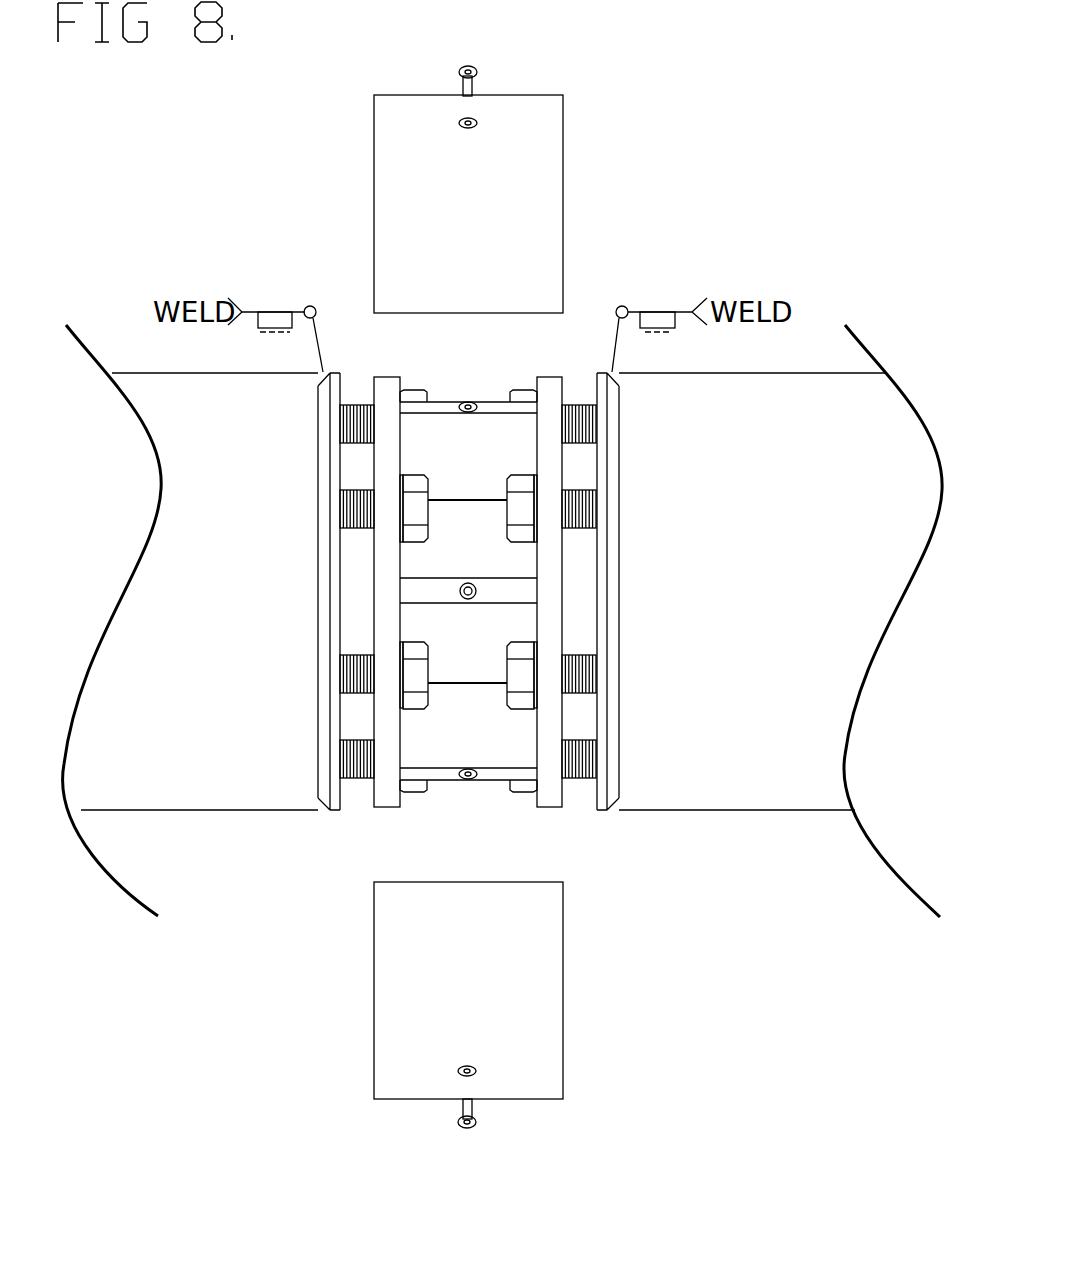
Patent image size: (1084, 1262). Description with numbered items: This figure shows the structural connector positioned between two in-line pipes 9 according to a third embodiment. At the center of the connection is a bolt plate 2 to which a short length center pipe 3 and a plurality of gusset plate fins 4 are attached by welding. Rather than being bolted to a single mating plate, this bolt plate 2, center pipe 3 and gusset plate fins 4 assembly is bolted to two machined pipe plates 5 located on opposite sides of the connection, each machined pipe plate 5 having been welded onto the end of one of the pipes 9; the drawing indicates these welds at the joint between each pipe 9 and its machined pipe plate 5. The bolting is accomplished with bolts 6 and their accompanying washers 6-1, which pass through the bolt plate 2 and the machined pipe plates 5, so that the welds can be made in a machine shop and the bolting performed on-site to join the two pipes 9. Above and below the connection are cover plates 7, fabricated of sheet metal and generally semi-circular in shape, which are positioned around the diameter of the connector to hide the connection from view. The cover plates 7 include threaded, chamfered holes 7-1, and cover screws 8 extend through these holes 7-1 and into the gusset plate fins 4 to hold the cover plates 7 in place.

The machined bolt plate 2 is at (387, 795).
The short length center pipe 3 is at (457, 657).
The gusset plate fins 4 is at (504, 436).
The machined pipe plate 5 is at (325, 792).
The bolts 6 is at (413, 503).
The washers 6-1 is at (400, 652).
The cover plates 7 is at (528, 122).
The threaded holes 7-1 is at (460, 123).
The cover screws 8 is at (463, 68).
The pipe 9 is at (225, 752).